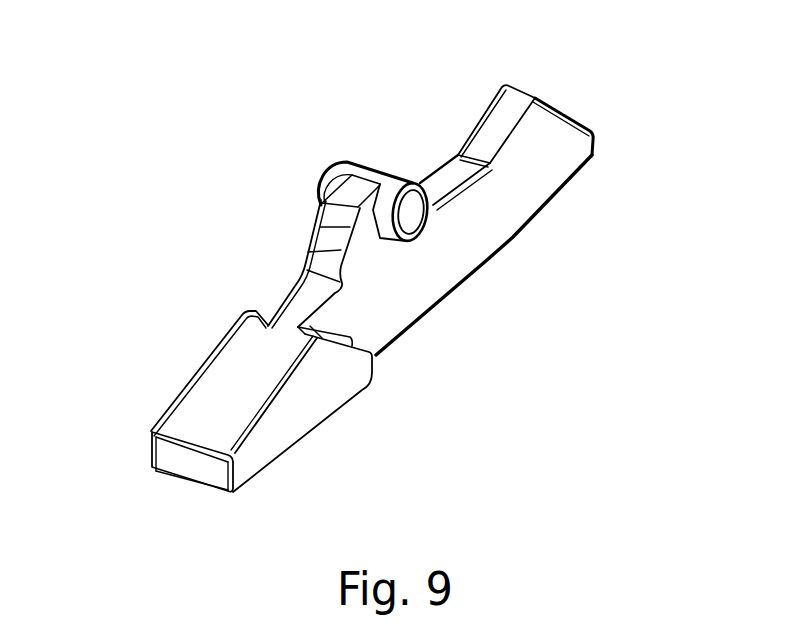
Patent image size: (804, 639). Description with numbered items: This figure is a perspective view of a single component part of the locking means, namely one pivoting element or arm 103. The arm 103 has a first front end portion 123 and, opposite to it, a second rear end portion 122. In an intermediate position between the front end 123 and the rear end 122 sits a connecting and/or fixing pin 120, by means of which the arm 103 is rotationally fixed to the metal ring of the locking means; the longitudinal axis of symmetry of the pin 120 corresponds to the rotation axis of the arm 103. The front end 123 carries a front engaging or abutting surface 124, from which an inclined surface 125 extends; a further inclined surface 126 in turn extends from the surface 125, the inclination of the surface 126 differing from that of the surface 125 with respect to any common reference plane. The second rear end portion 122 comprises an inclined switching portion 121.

The pivoting element or arm 103 is at (298, 162).
The connecting and/or fixing pin 120 is at (410, 213).
The inclined switching portion 121 is at (547, 98).
The second rear end portion 122 is at (563, 152).
The first front end portion 123 is at (302, 410).
The front engaging or abutting surface 124 is at (183, 457).
The inclined surface 125 is at (232, 380).
The further inclined surface 126 is at (330, 252).